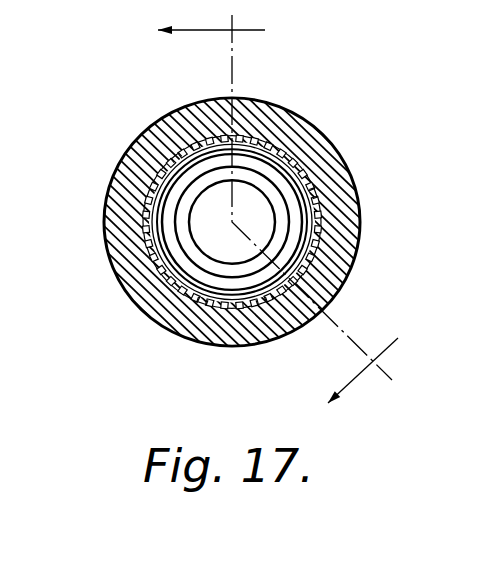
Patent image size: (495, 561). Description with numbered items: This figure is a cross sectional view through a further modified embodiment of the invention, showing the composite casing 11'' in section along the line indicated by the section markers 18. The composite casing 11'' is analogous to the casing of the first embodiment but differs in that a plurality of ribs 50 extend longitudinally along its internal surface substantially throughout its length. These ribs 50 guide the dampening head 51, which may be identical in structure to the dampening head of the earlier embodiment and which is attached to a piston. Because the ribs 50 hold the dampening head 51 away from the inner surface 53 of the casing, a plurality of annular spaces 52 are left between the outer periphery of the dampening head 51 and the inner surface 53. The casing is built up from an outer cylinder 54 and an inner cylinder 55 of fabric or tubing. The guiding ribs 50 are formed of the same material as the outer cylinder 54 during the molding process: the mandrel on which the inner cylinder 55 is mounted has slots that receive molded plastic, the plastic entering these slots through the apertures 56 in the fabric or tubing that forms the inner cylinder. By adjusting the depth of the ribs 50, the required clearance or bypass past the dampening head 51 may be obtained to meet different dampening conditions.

The composite casing 11'' is at (232, 202).
The section line 18- 18 is at (295, 201).
The ribs 50 is at (163, 168).
The dampening head 51 is at (312, 207).
The annular spaces 52 is at (190, 126).
The inner surface 53 is at (140, 233).
The outer cylinder 54 is at (312, 133).
The inner cylinder 55 is at (338, 292).
The apertures 56 is at (160, 193).